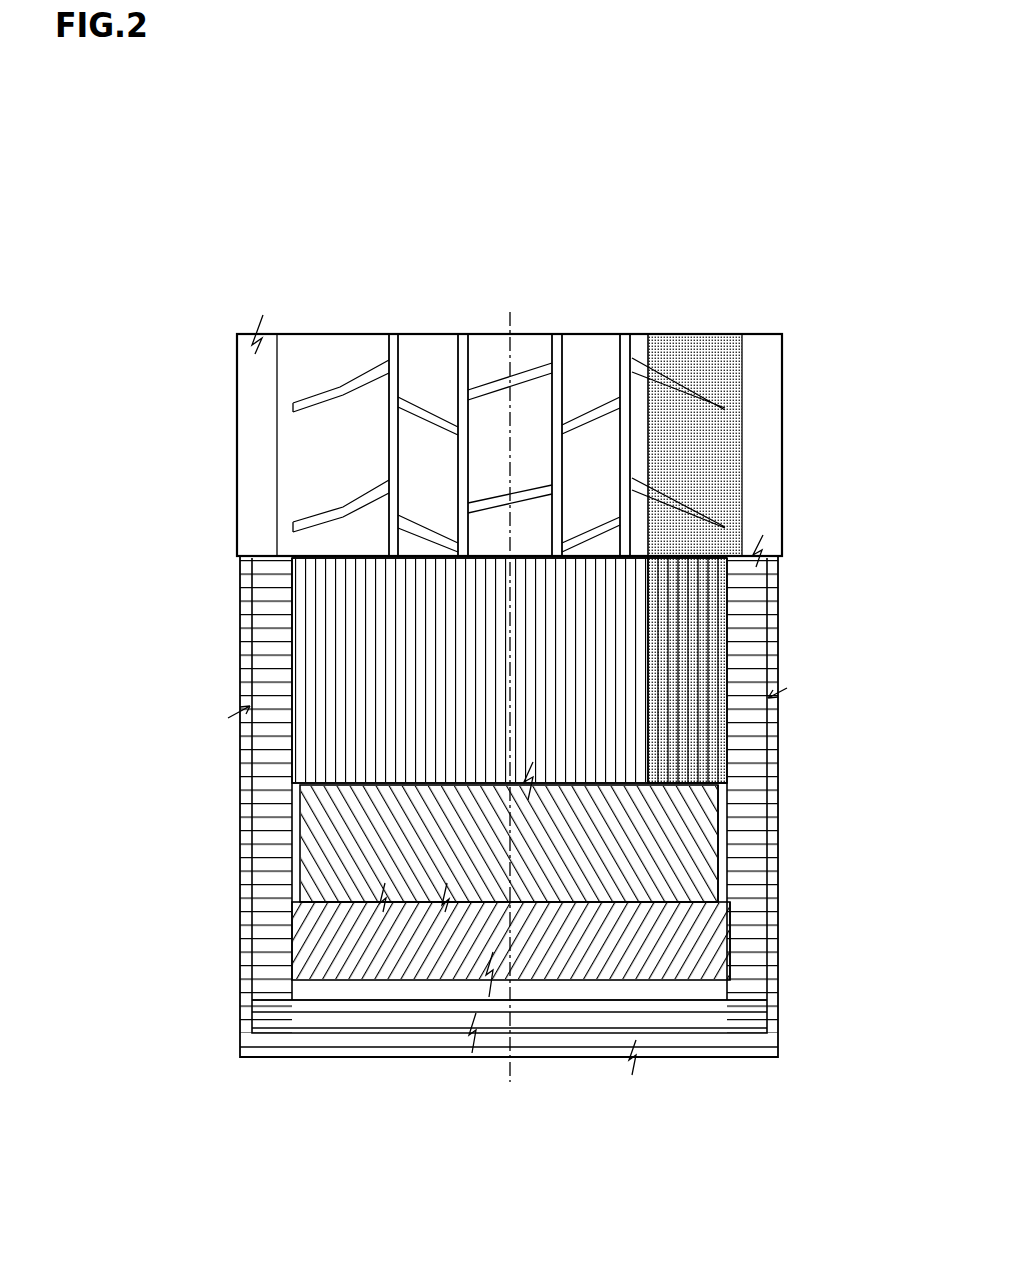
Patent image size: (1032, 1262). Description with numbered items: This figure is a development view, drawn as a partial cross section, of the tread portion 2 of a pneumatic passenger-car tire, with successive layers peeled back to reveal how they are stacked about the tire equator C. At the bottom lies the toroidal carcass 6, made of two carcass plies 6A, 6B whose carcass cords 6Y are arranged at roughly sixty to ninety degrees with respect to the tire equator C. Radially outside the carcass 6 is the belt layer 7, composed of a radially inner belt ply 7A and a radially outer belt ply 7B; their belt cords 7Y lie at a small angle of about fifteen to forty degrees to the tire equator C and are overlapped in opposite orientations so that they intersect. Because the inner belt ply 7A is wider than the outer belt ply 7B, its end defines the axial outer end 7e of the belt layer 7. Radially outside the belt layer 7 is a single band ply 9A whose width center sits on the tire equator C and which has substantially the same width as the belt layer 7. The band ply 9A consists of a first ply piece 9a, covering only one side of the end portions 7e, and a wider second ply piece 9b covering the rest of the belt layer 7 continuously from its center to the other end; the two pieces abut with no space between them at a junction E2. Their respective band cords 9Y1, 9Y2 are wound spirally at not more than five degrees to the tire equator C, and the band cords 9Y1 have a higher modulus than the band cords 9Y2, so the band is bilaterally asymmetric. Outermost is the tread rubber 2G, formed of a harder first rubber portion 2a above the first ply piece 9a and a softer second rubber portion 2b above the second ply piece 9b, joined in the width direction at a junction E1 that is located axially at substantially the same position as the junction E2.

The tread portion 2 is at (742, 309).
The tread rubber 2G is at (722, 258).
The first rubber portion 2a is at (698, 352).
The second rubber portion 2b is at (323, 352).
The tire equator C is at (511, 681).
The junction between first and second rubber portions E1 is at (650, 456).
The junction between first and second ply pieces E2 is at (672, 758).
The band ply 9A is at (170, 656).
The first ply piece 9a is at (672, 705).
The second ply piece 9b is at (322, 679).
The band cords of first ply piece 9Y1 is at (708, 713).
The band cords of second ply piece 9Y2 is at (323, 590).
The belt layer 7 is at (430, 1118).
The radially inner belt ply 7A is at (343, 965).
The radially outer belt ply 7B is at (387, 885).
The belt cords 7Y is at (335, 845).
The axial outer end of belt layer 7e is at (298, 904).
The carcass 6 is at (790, 1150).
The carcass ply 6A is at (773, 1035).
The carcass ply 6B is at (690, 1015).
The carcass cords 6Y is at (580, 1010).